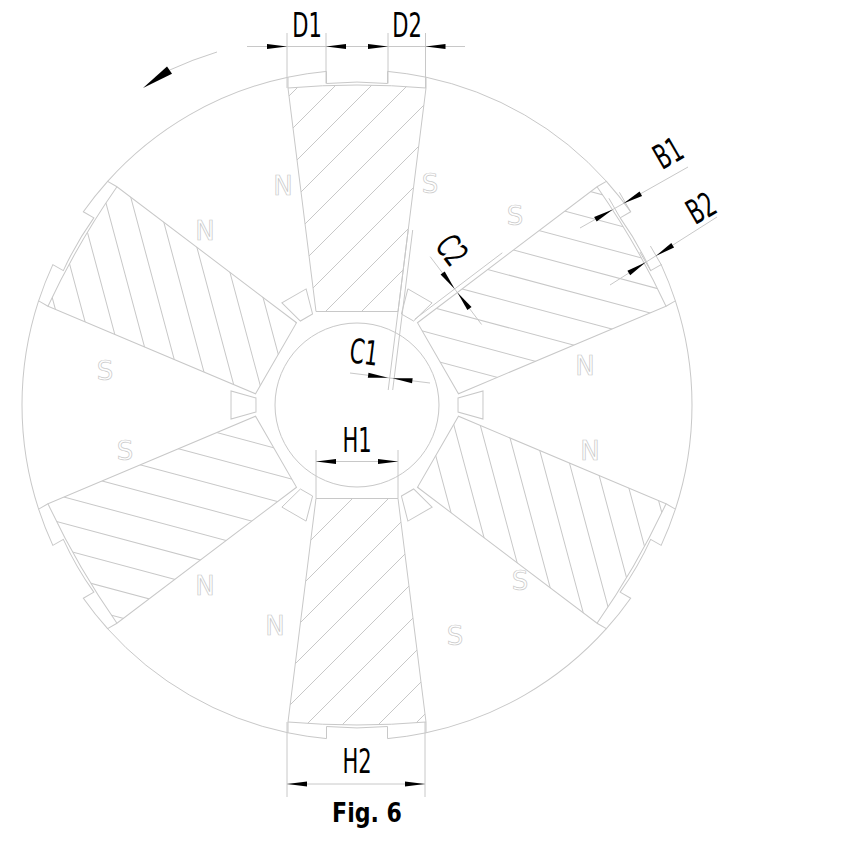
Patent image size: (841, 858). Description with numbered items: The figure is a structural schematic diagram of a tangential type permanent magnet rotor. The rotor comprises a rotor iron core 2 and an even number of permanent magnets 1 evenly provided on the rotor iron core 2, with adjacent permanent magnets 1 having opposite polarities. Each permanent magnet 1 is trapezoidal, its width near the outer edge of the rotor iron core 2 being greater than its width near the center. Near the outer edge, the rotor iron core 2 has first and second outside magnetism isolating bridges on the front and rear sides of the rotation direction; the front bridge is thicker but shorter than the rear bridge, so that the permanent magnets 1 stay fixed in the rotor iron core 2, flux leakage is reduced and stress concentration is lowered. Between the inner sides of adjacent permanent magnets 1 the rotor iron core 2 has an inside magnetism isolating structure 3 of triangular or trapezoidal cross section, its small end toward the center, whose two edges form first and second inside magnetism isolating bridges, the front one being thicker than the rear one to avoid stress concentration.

The permanent magnet 1 is at (383, 190).
The rotor iron core 2 is at (528, 163).
The inside magnetism isolating structure 3 is at (290, 297).